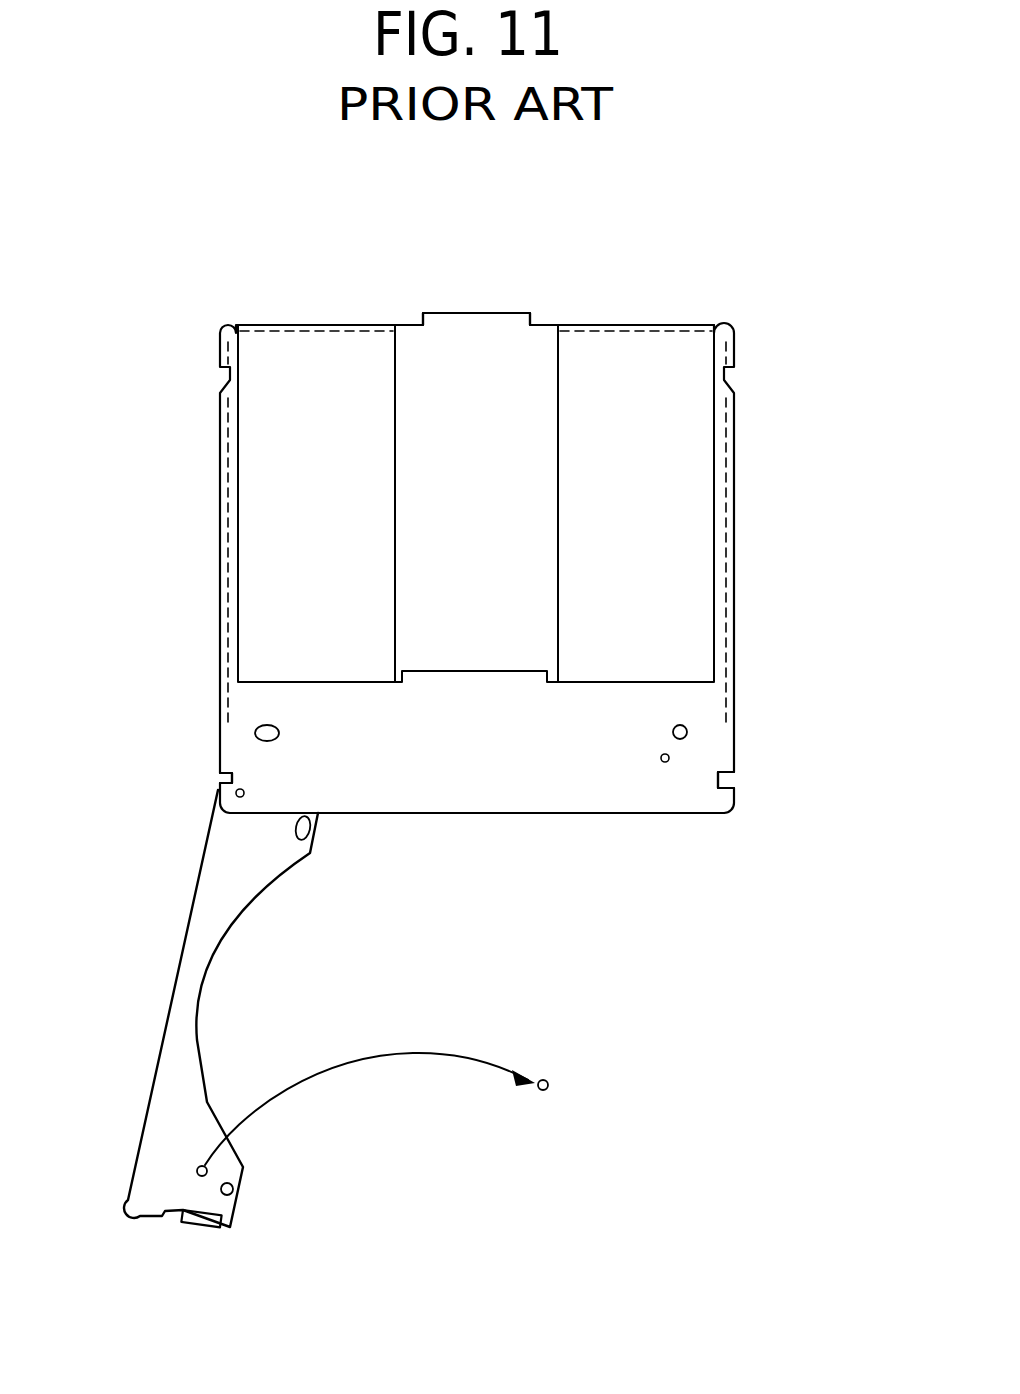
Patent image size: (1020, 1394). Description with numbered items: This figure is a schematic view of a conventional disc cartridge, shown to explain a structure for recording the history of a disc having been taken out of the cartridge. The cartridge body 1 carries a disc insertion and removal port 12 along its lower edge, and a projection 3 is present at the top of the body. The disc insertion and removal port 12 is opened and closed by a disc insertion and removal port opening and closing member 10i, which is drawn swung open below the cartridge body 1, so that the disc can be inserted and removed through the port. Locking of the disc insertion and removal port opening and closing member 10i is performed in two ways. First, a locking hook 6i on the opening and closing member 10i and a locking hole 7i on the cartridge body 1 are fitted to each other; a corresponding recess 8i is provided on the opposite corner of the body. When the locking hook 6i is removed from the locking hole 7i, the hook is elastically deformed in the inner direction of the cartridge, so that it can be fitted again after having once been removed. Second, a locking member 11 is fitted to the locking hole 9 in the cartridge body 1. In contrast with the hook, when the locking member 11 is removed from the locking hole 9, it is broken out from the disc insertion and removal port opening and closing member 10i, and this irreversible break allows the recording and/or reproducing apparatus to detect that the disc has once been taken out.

The cartridge housing 1 is at (277, 443).
The projection 3 is at (485, 325).
The locking hole 9 is at (669, 756).
The locking hole 7i is at (735, 778).
The left engagement recess 8i is at (223, 797).
The disc insertion and removal port opening and closing member 10i is at (203, 918).
The locking member 11 is at (549, 1085).
The disc insertion and removal port 12 is at (612, 813).
The locking hook 6i is at (190, 1222).